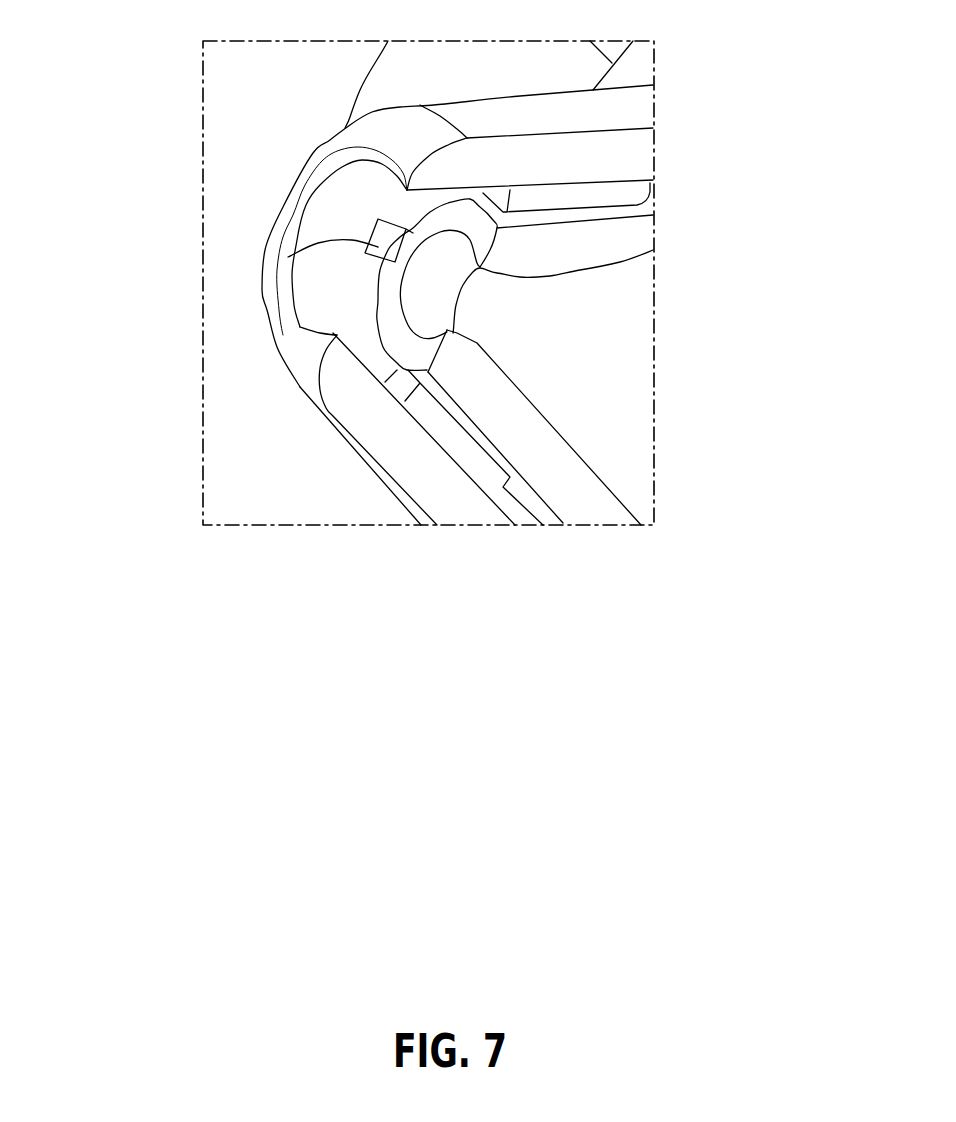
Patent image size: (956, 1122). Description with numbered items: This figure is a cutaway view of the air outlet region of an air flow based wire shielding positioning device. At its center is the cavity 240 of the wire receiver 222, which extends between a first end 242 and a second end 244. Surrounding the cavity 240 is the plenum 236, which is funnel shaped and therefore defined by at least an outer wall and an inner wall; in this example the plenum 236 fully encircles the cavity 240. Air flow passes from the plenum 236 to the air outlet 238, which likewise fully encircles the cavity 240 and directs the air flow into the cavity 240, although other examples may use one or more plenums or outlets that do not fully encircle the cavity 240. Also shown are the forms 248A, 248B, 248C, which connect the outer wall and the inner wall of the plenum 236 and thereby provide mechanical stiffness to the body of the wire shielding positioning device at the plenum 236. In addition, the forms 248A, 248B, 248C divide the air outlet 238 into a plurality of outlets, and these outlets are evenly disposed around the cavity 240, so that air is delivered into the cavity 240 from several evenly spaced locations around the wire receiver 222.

The wire receiver 222 is at (280, 233).
The cavity 240 is at (410, 232).
The form 248A is at (648, 190).
The second end 244 is at (527, 323).
The form 248B is at (358, 242).
The first end 242 is at (308, 305).
The air outlet 238 is at (372, 357).
The form 248C is at (457, 443).
The plenum 236 is at (513, 505).